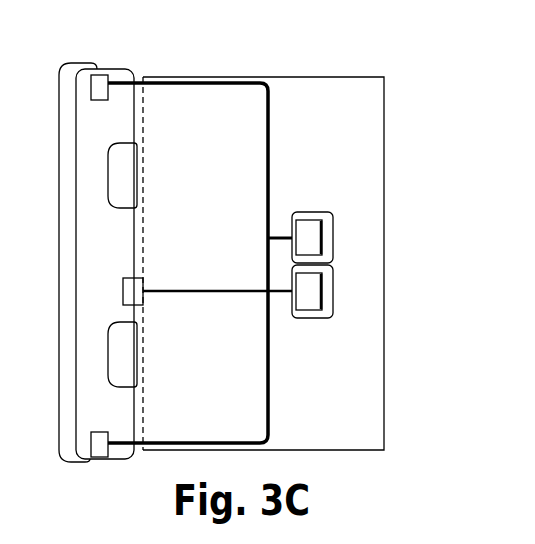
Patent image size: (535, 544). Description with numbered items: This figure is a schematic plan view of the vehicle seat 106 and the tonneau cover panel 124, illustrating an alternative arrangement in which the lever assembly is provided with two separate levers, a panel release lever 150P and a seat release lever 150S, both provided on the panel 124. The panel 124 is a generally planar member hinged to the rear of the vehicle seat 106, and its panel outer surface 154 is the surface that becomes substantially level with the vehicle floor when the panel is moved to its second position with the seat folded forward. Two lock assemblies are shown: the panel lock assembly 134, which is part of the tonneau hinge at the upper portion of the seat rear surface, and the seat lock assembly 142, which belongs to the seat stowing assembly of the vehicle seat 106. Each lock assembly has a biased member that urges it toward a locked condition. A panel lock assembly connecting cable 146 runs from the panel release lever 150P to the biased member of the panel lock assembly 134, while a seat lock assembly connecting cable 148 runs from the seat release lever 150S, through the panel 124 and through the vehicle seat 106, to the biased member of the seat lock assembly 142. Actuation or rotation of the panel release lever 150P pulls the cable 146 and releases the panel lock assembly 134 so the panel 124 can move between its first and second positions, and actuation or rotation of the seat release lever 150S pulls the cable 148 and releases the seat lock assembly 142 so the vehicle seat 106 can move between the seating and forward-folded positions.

The vehicle seat 106 is at (95, 402).
The tonneau cover panel 124 is at (347, 77).
The panel lock assembly 134 is at (123, 294).
The seat lock assembly 142 is at (99, 87).
The panel lock assembly connecting cable 146 is at (208, 291).
The seat lock assembly connecting cable 148 is at (270, 120).
The seat release lever 150S is at (335, 239).
The panel release lever 150P is at (335, 290).
The panel outer surface 154 is at (345, 419).